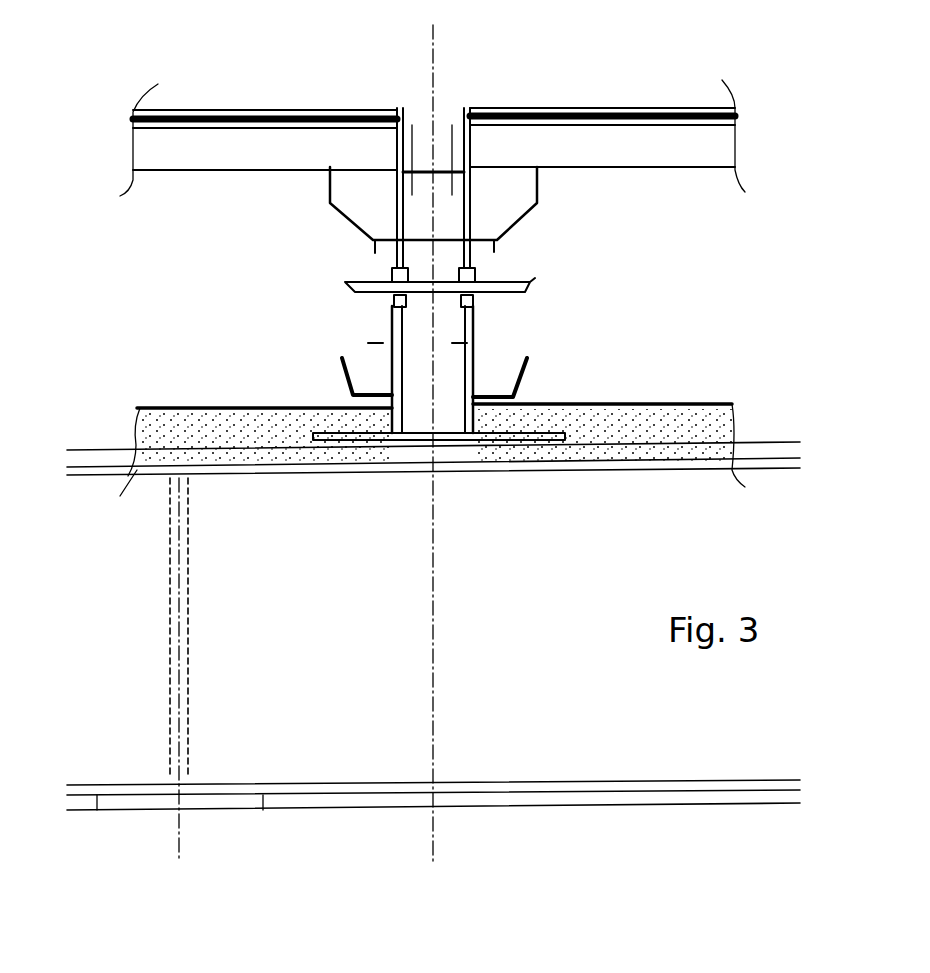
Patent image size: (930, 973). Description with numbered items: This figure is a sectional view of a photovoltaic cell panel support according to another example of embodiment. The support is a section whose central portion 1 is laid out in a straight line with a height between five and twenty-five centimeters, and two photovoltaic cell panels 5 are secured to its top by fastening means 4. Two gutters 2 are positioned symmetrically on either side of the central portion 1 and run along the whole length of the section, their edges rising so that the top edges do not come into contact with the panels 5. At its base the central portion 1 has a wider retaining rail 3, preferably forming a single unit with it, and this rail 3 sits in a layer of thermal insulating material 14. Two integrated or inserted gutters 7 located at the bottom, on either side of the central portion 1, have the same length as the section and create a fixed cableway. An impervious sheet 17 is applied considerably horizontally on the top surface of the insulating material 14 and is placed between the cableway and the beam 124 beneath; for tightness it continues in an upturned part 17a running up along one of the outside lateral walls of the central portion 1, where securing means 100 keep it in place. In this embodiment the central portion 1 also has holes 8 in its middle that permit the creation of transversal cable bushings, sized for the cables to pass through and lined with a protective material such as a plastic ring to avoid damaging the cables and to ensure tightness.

The central portion 1 is at (478, 263).
The gutters 2 is at (342, 238).
The retaining rail 3 is at (522, 442).
The fastening means 4 is at (413, 150).
The photovoltaic cell panels 5 is at (237, 172).
The integrated or inserted gutters 7 is at (342, 376).
The holes 8 is at (392, 307).
The insulating material 14 is at (672, 432).
The impervious sheet 17 is at (212, 407).
The impervious sheet portion along lateral wall 17a is at (392, 318).
The securing means 100 is at (476, 343).
The beam 124 is at (82, 478).